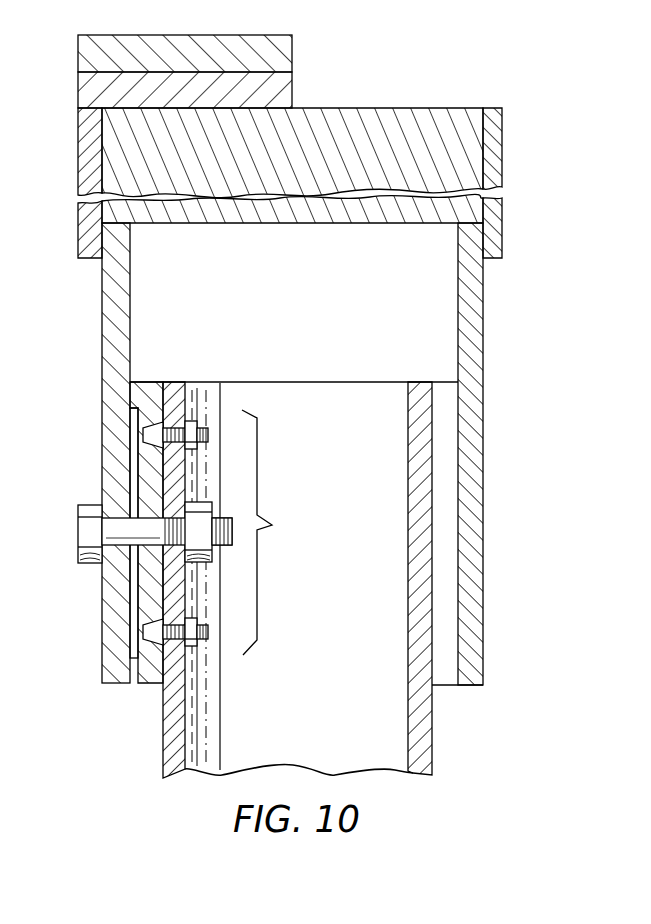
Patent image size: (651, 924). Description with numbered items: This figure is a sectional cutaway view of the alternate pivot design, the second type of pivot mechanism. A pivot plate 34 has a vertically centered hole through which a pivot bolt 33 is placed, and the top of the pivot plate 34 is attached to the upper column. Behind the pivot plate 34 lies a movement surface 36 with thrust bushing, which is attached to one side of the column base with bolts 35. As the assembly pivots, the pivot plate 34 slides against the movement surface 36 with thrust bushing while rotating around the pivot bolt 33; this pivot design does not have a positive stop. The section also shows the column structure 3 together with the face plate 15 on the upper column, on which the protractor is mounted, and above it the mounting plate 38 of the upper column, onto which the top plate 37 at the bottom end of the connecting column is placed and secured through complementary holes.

The top plate 37 is at (292, 40).
The mounting plate 38 is at (292, 93).
The face plate 15 is at (78, 217).
The pivot plate 34 is at (102, 338).
The movement surface with thrust bushing 36 is at (149, 392).
The pivot bolt 33 is at (90, 512).
The bolts 35 is at (272, 525).
The liner tube 3 is at (163, 737).